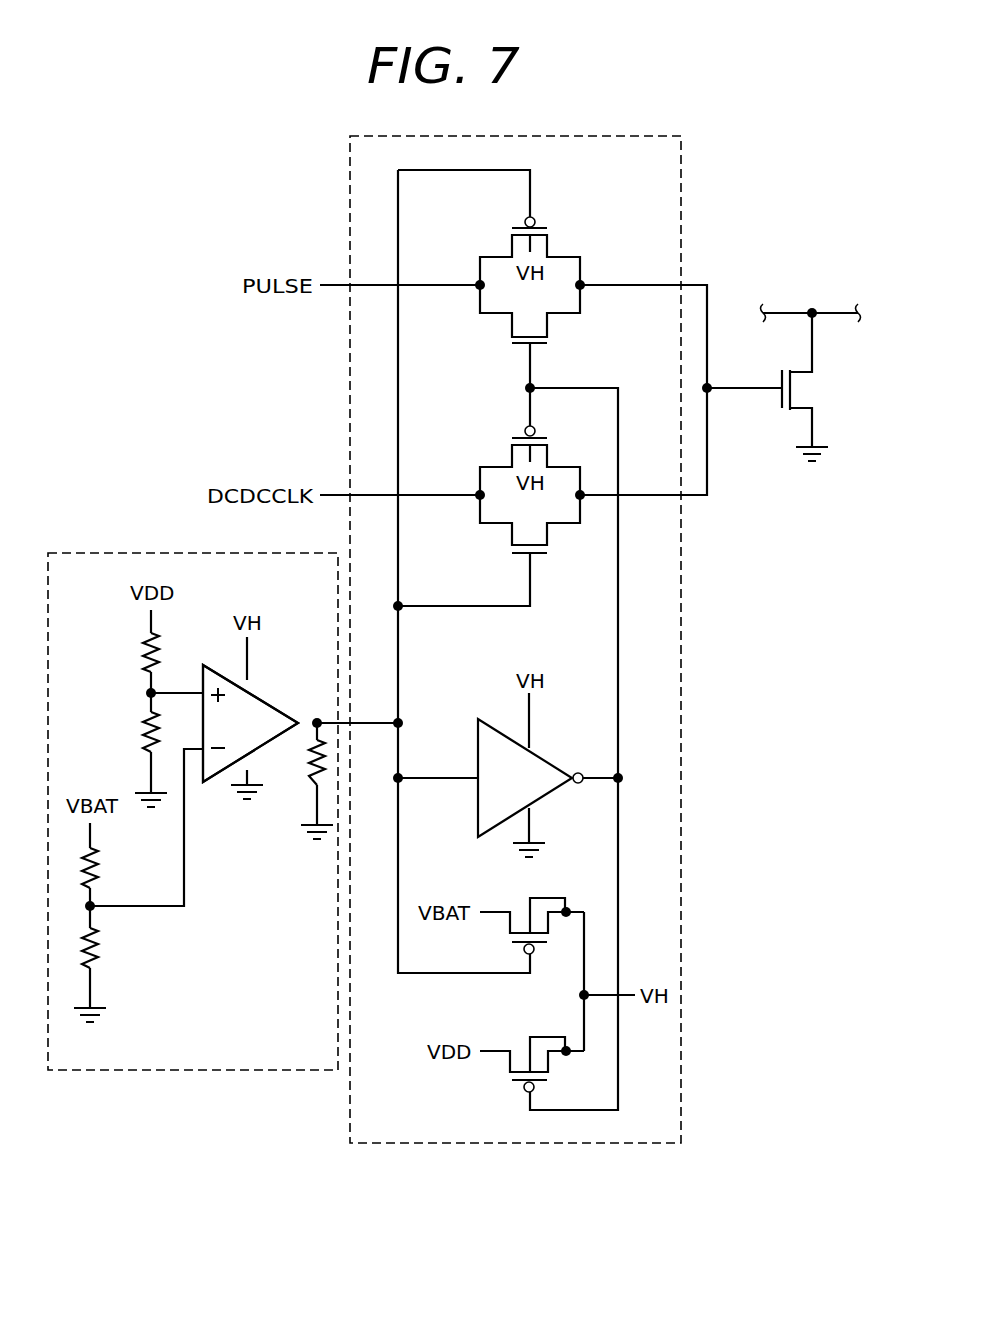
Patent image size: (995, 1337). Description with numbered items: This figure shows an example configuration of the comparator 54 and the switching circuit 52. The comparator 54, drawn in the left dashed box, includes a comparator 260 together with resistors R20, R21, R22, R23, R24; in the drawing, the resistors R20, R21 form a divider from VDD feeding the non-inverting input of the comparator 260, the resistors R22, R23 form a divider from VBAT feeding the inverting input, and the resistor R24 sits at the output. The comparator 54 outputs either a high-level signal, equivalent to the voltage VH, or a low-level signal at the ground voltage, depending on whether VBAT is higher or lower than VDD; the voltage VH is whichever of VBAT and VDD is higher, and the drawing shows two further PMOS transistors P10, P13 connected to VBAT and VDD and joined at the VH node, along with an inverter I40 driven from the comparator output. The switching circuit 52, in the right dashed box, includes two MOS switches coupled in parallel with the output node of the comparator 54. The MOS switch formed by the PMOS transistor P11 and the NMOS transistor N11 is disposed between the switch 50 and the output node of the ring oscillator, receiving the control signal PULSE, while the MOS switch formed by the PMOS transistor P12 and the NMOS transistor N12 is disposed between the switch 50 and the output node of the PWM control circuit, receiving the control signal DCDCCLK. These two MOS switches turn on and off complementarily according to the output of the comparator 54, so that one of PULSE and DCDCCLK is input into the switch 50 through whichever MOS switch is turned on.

The switching circuit 52 is at (683, 163).
The switch 50 is at (806, 388).
The comparator 54 is at (262, 1072).
The PMOS transistor P11 is at (543, 227).
The NMOS transistor N11 is at (540, 345).
The PMOS transistor P12 is at (517, 434).
The NMOS transistor N12 is at (540, 555).
The inverter I40 is at (548, 760).
The P-channel transistor P10 is at (523, 910).
The P-channel transistor P13 is at (523, 1049).
The comparator 260 is at (270, 700).
The resistor R20 is at (144, 664).
The resistor R21 is at (144, 743).
The resistor R22 is at (98, 856).
The resistor R23 is at (98, 947).
The resistor R24 is at (304, 776).